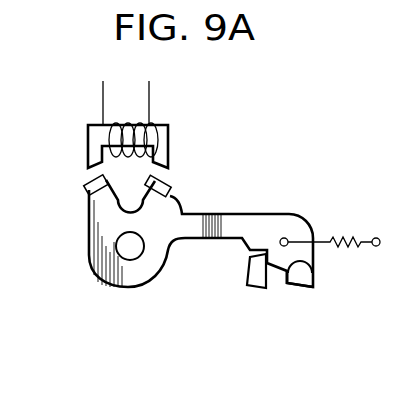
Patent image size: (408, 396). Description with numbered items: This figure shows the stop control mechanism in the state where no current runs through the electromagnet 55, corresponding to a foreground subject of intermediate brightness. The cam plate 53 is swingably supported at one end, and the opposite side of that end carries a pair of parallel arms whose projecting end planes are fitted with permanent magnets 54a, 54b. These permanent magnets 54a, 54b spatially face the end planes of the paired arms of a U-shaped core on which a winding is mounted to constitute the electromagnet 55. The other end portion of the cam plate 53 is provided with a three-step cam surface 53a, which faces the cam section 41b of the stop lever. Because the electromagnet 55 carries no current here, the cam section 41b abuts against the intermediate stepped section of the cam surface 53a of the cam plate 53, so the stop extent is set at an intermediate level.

The electromagnet 55 is at (167, 133).
The permanent magnet 54a is at (86, 190).
The permanent magnet 54b is at (170, 189).
The cam plate 53 is at (250, 223).
The cam surface 53a is at (313, 268).
The cam section 41b is at (252, 288).